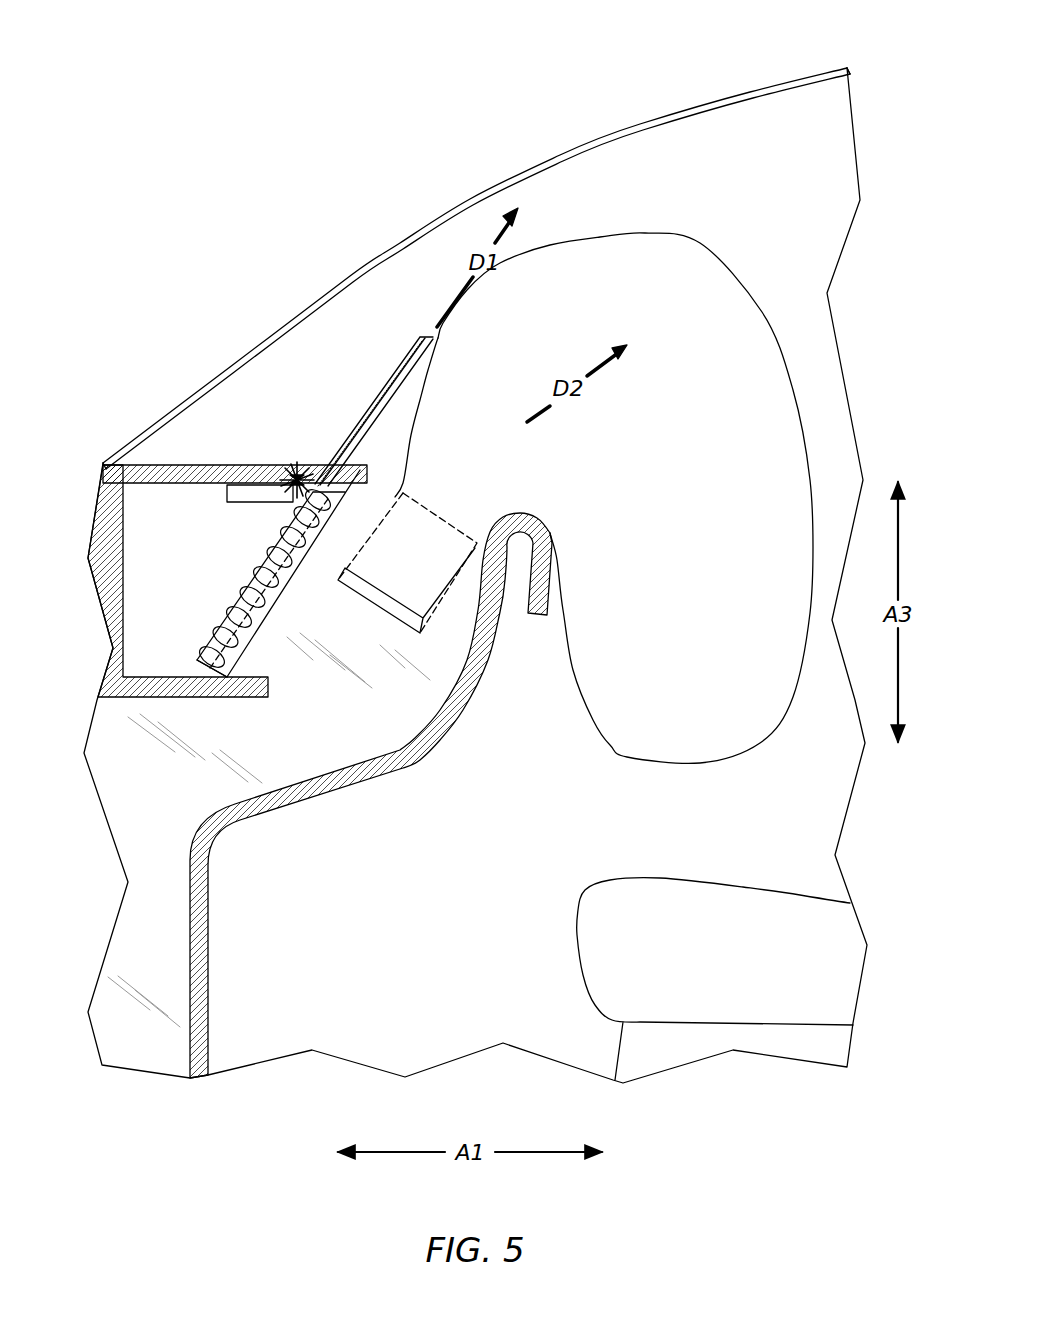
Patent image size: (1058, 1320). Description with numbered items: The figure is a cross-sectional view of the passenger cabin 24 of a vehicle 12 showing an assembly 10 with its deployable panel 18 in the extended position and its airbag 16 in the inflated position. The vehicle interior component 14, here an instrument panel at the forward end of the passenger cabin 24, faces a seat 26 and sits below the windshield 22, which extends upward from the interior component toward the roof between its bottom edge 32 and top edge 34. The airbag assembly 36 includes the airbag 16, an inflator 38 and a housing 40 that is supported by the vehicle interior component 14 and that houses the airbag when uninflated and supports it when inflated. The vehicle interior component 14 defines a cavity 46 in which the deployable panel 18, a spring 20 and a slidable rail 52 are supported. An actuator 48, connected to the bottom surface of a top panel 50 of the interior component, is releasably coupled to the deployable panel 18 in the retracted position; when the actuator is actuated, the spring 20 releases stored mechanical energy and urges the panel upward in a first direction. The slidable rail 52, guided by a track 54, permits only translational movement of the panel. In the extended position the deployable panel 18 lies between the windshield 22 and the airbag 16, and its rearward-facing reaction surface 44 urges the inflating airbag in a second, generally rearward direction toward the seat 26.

The assembly 10 is at (302, 425).
The vehicle 12 is at (266, 194).
The vehicle interior component 14 is at (313, 752).
The airbag 16 is at (707, 247).
The deployable panel 18 is at (419, 337).
The spring 20 is at (200, 652).
The windshield 22 is at (463, 198).
The passenger cabin 24 is at (640, 166).
The seat 26 is at (687, 898).
The bottom edge 32 is at (102, 462).
The top edge 34 is at (847, 66).
The airbag assembly 36 is at (447, 626).
The inflator 38 is at (421, 634).
The housing 40 is at (396, 620).
The reaction surface 44 is at (398, 410).
The cavity 46 is at (255, 638).
The actuator 48 is at (227, 493).
The top panel 50 is at (243, 463).
The slidable rail 52 is at (392, 395).
The track 54 is at (243, 597).